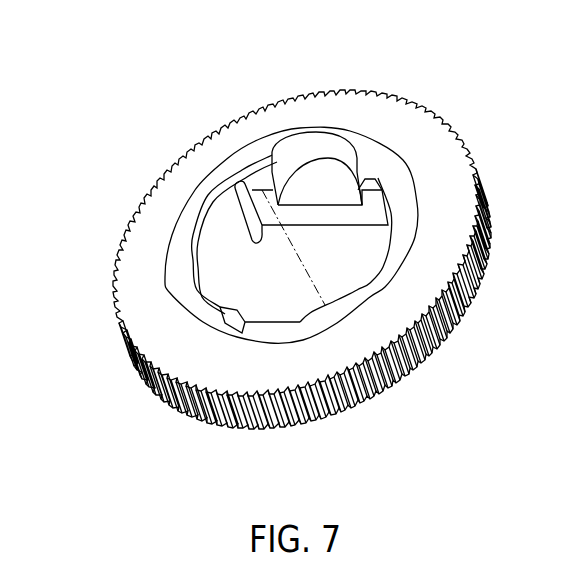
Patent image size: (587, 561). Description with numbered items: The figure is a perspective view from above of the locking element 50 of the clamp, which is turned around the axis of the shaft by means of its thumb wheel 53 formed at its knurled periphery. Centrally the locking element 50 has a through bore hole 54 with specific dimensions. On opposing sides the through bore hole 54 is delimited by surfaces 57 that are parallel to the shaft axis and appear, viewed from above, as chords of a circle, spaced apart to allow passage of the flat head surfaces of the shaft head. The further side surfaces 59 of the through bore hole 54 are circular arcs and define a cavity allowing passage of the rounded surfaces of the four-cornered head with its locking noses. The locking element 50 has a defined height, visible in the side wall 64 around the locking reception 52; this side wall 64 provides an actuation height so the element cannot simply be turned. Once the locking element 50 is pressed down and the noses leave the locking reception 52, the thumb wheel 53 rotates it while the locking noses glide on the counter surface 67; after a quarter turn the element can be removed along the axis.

The locking element 50 is at (307, 259).
The locking reception 52 is at (297, 165).
The thumb wheel 53 is at (387, 377).
The through bore hole 54 is at (338, 252).
The surfaces 57 is at (310, 215).
The further side surfaces 59 is at (217, 265).
The side wall 64 is at (333, 150).
The counter surface 67 is at (383, 273).